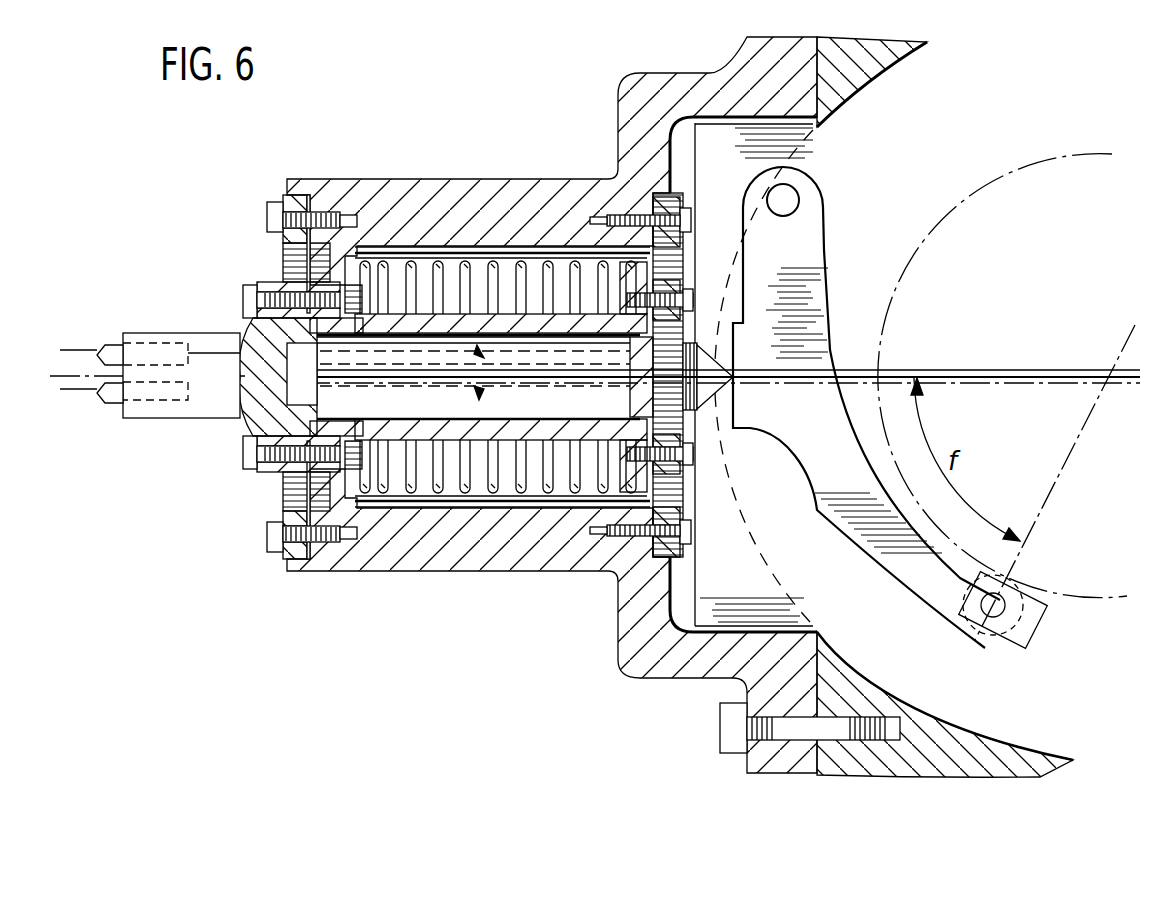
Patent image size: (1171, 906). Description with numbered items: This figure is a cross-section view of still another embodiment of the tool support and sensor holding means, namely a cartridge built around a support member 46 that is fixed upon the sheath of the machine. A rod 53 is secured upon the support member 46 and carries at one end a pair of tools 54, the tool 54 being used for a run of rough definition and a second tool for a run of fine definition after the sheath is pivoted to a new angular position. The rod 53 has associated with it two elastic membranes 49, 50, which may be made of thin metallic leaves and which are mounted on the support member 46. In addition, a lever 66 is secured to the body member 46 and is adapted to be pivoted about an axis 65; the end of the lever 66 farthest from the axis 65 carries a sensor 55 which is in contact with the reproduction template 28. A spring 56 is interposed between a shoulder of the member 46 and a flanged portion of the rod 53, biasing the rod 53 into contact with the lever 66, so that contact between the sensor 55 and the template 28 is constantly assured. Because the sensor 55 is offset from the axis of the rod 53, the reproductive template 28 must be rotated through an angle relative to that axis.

The reproduction template 28 is at (951, 212).
The support member 46 is at (537, 192).
The elastic membrane 49 is at (282, 256).
The elastic membrane 50 is at (683, 262).
The rod 53 is at (424, 424).
The tool 54 is at (113, 347).
The sensor 55 is at (1012, 588).
The spring 56 is at (465, 262).
The axis 65 is at (768, 200).
The lever 66 is at (808, 239).